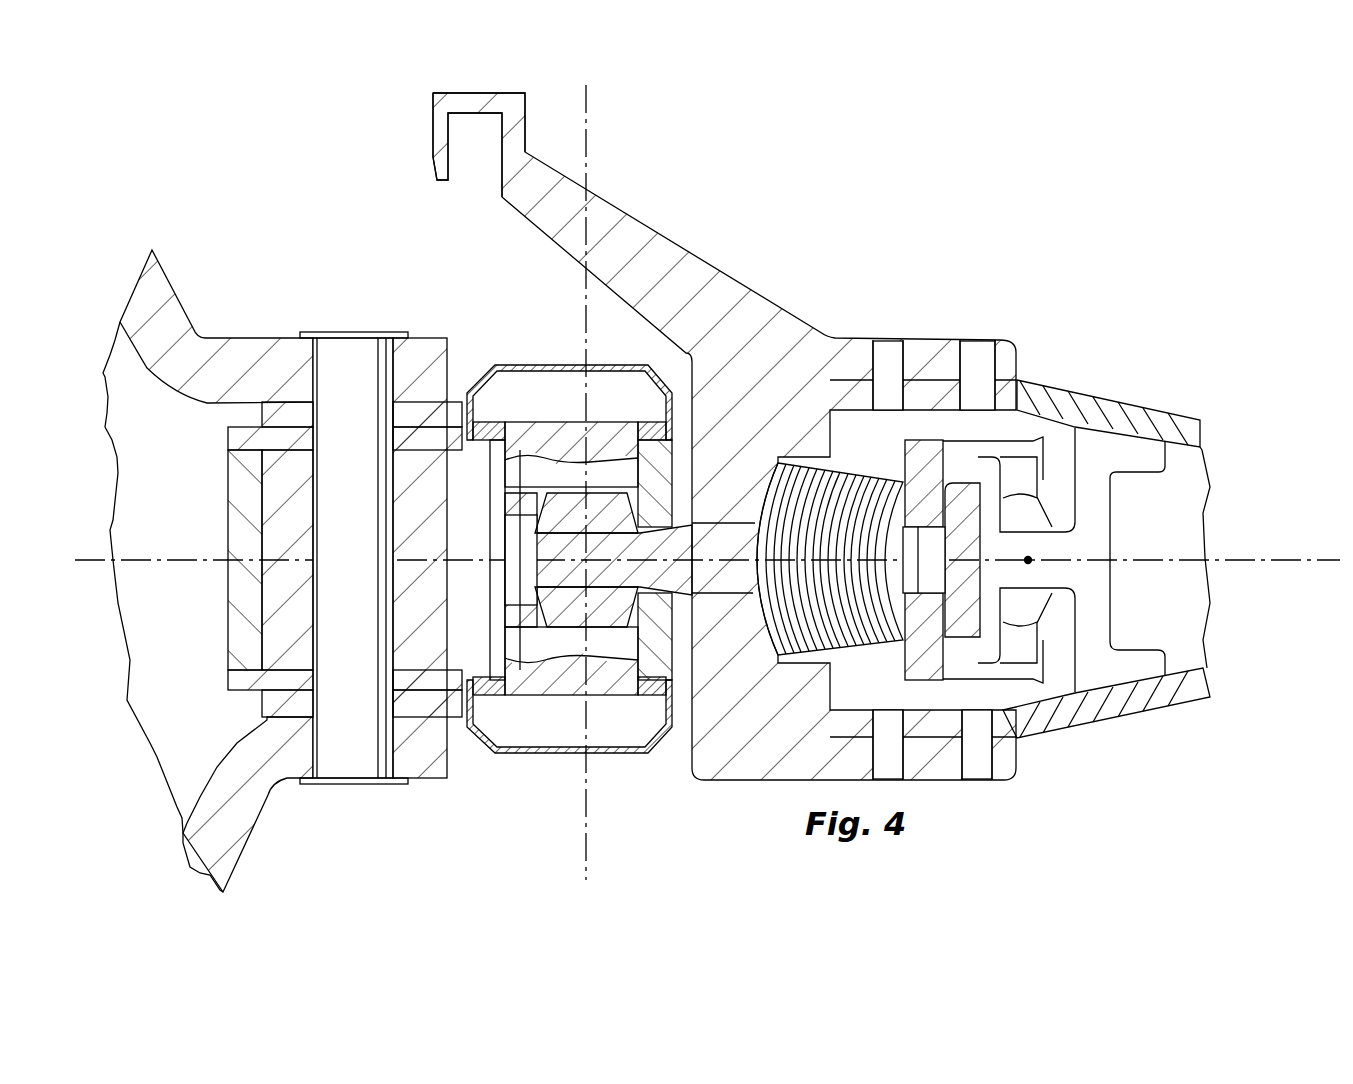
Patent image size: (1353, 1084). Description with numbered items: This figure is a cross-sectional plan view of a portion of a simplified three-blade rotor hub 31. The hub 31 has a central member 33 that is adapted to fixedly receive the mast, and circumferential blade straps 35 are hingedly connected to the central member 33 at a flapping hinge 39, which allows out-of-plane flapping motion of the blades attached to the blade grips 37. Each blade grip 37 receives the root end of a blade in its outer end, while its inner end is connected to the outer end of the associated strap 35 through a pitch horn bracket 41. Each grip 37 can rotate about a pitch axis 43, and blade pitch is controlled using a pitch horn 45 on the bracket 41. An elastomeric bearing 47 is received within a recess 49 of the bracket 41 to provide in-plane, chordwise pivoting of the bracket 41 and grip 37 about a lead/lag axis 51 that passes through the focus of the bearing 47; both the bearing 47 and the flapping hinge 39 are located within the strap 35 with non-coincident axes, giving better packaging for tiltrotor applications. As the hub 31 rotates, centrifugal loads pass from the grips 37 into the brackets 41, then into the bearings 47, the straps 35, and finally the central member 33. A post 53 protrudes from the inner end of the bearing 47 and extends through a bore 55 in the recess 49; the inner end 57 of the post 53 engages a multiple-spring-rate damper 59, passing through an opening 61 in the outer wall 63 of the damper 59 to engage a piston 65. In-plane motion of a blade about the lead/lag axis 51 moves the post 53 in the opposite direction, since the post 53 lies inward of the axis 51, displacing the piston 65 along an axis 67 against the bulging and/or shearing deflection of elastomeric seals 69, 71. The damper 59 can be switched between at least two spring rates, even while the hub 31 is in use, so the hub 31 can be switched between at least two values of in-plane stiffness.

The hub 31 is at (278, 245).
The central member 33 is at (243, 338).
The blade strap 35 is at (228, 615).
The blade grip 37 is at (1085, 392).
The flapping hinge 39 is at (355, 333).
The pitch horn bracket 41 is at (932, 340).
The pitch axis 43 is at (1254, 560).
The pitch horn 45 is at (432, 125).
The elastomeric bearing 47 is at (858, 645).
The recess 49 is at (826, 466).
The lead/lag axis 51 is at (1028, 560).
The post 53 is at (743, 525).
The bore 55 is at (811, 581).
The inner end 57 is at (618, 532).
The multiple-spring-rate damper 59 is at (575, 571).
The opening 61 is at (640, 515).
The outer wall 63 is at (675, 382).
The piston 65 is at (592, 477).
The axis 67 is at (590, 140).
The elastomeric seal 69 is at (490, 413).
The elastomeric seal 71 is at (655, 708).